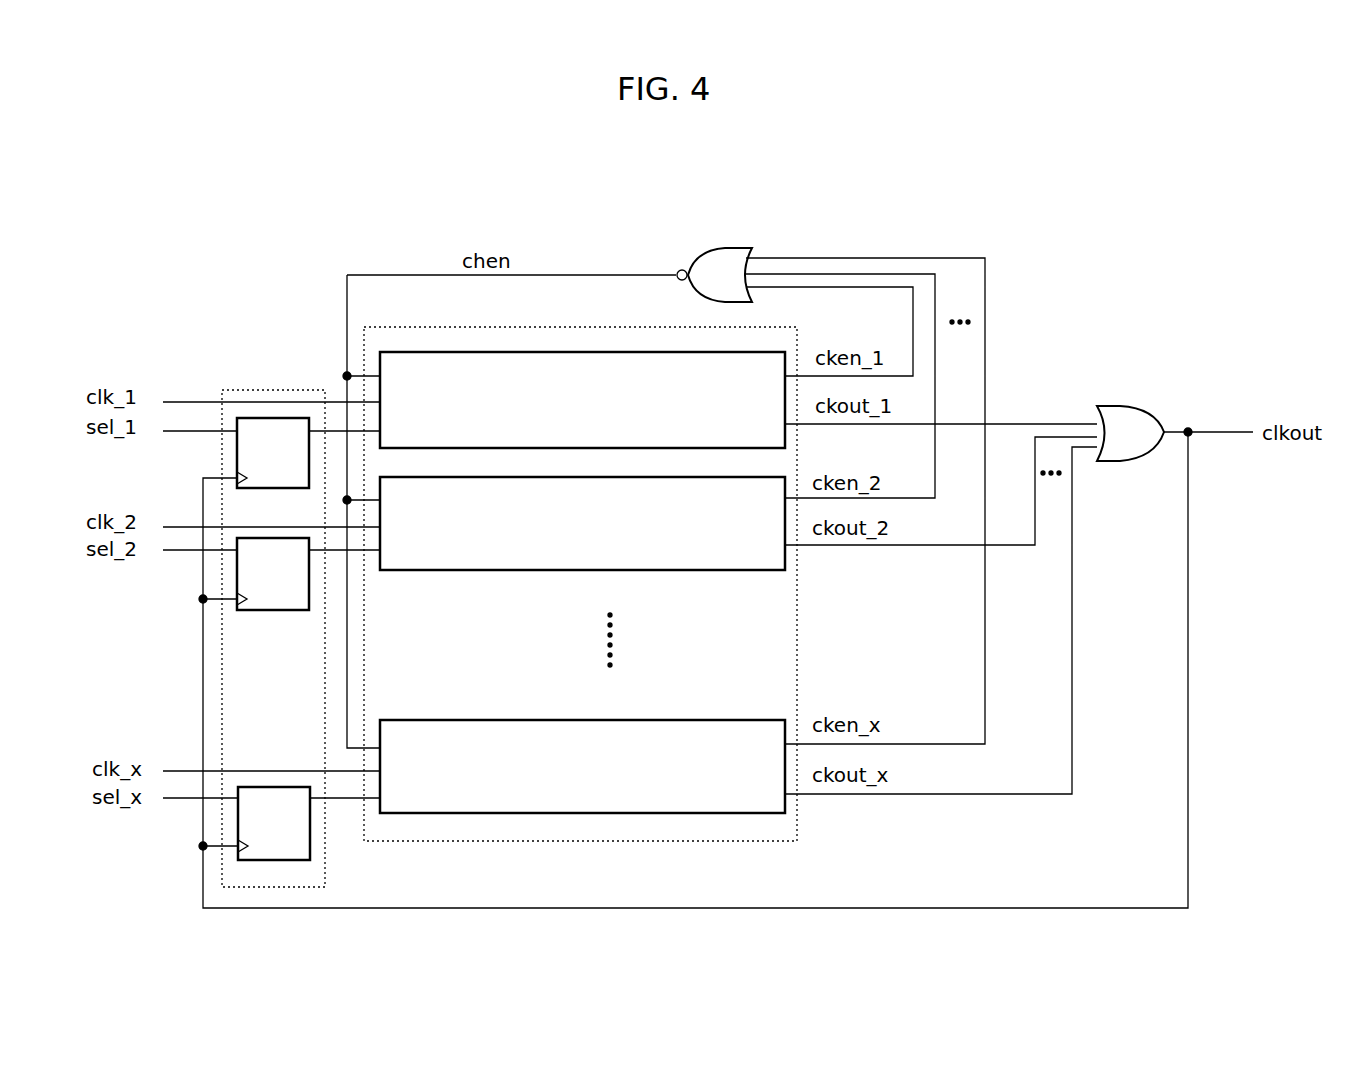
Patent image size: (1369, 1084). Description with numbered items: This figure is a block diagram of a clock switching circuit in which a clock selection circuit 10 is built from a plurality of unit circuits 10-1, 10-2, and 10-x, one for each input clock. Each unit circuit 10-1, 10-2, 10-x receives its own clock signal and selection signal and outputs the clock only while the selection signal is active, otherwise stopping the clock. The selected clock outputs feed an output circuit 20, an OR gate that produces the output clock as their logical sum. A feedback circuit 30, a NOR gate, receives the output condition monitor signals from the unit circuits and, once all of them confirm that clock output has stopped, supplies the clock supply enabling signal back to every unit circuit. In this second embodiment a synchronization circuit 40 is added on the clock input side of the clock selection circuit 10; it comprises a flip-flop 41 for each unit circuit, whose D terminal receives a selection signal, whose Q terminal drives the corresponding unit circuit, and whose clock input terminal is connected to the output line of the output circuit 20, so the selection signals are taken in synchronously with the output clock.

The clock selection circuit 10 is at (621, 586).
The unit circuit 10-1 is at (580, 352).
The unit circuit 10-2 is at (540, 570).
The unit circuit 10-x is at (582, 804).
The output circuit 20 is at (1112, 406).
The feedback circuit 30 is at (722, 247).
The synchronization circuit 40 is at (315, 671).
The flip-flop 41 is at (265, 862).